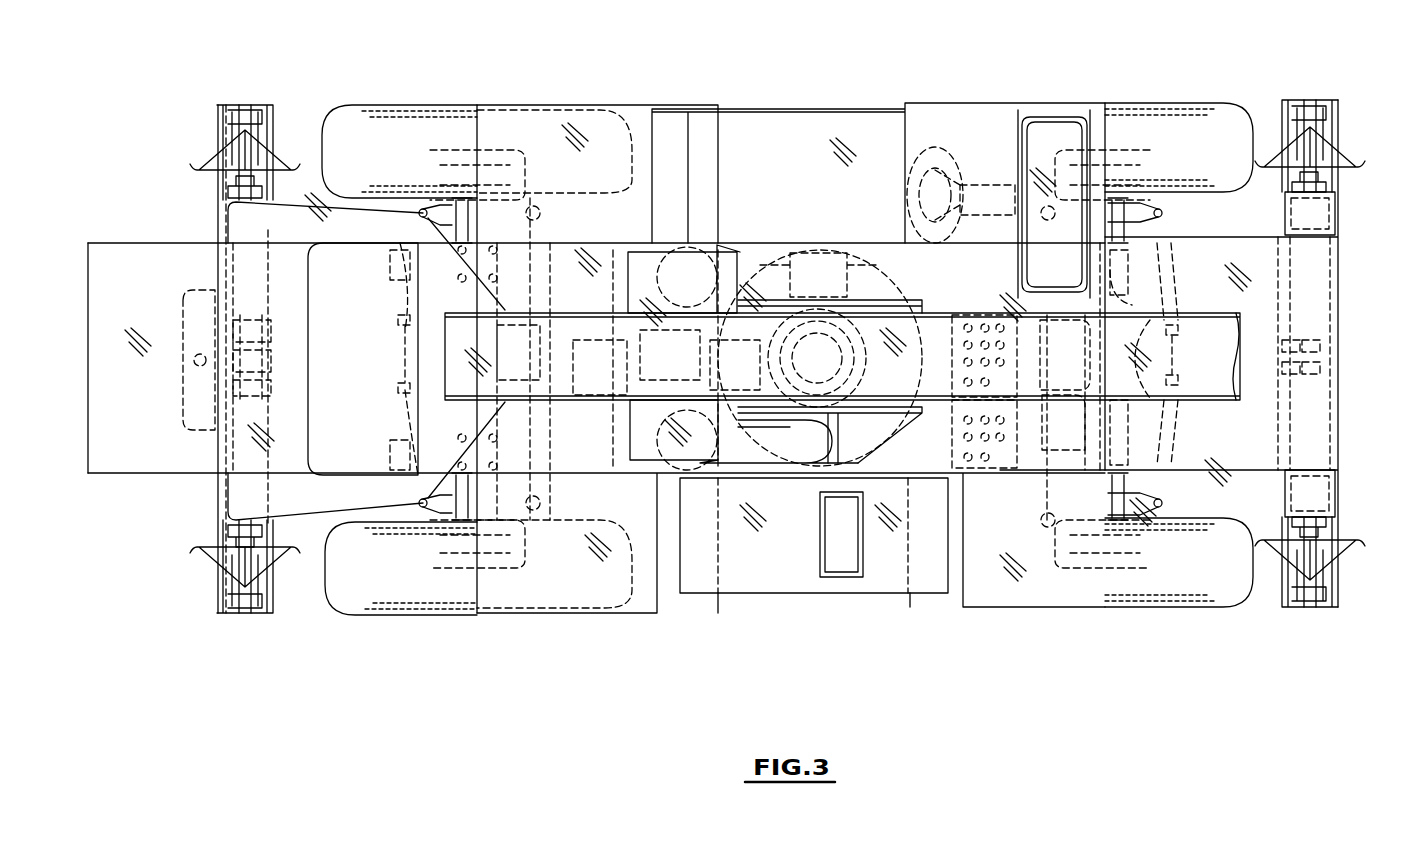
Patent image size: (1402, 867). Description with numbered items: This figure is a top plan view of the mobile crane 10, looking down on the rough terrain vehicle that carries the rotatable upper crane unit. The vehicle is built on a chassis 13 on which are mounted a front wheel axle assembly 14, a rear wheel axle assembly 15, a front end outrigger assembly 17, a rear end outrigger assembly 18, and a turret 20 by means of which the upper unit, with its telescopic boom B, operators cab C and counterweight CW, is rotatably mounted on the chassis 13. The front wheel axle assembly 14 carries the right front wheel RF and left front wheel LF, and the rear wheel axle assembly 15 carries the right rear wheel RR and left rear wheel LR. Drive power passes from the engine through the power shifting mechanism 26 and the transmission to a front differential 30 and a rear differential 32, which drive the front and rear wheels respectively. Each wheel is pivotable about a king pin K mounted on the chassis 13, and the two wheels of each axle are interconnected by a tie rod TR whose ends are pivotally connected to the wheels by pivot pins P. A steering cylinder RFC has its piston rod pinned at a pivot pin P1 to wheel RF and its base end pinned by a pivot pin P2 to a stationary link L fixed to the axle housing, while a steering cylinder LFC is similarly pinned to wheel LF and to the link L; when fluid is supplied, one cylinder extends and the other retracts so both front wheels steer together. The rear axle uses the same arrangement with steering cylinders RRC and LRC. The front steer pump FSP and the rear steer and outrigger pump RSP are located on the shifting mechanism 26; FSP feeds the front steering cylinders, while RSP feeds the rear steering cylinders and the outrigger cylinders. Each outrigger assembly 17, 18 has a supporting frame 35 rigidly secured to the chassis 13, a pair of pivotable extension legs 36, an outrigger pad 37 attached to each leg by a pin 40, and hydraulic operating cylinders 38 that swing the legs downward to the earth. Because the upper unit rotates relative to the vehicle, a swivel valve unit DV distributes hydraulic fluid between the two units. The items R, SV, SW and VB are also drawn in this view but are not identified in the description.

The mobile crane 10 is at (856, 86).
The chassis 13 is at (1232, 237).
The front wheel axle assembly 14 is at (1126, 300).
The rear wheel axle assembly 15 is at (400, 310).
The front end outrigger assembly 17 is at (1340, 482).
The rear end outrigger assembly 18 is at (218, 210).
The turret 20 is at (886, 258).
The power shifting mechanism 26 is at (586, 313).
The front differential 30 is at (1012, 313).
The rear differential 32 is at (510, 410).
The supporting frame 35 is at (1338, 222).
The extension leg 36 is at (224, 105).
The outrigger pad 37 is at (215, 160).
The hydraulic operating cylinder 38 is at (228, 192).
The pin 40 is at (252, 110).
The telescopic boom B is at (1190, 313).
The operators cab C is at (1062, 120).
The counterweight CW is at (230, 260).
The swivel valve unit DV is at (846, 380).
The front steer pump FSP is at (712, 380).
The king pin K is at (516, 165).
The stationary link L is at (403, 350).
The left front wheel LF is at (1185, 103).
The steering cylinder LFC is at (1178, 262).
The left rear wheel LR is at (383, 105).
The steering cylinder LRC is at (392, 270).
The pivot pin P is at (541, 214).
The pivot pin P1 is at (419, 214).
The pivot pin P2 is at (398, 320).
The radiator R is at (802, 593).
The right front wheel RF is at (1202, 607).
The steering cylinder RFC is at (1176, 445).
The right rear wheel RR is at (400, 615).
The steering cylinder RRC is at (405, 412).
The rear steer and outrigger pump RSP is at (684, 312).
The steering valve SV is at (992, 185).
The steering wheel SW is at (918, 155).
The tie rod TR is at (538, 422).
The valve block VB is at (1045, 408).